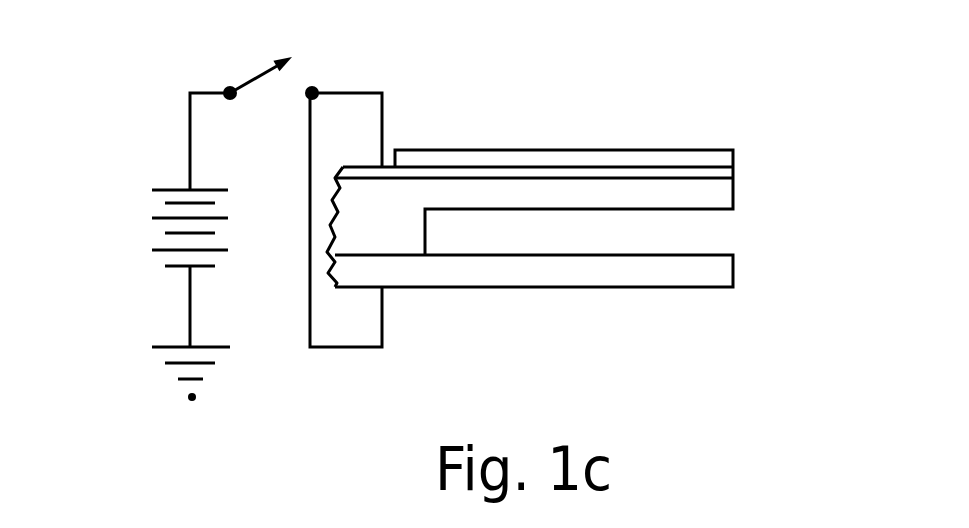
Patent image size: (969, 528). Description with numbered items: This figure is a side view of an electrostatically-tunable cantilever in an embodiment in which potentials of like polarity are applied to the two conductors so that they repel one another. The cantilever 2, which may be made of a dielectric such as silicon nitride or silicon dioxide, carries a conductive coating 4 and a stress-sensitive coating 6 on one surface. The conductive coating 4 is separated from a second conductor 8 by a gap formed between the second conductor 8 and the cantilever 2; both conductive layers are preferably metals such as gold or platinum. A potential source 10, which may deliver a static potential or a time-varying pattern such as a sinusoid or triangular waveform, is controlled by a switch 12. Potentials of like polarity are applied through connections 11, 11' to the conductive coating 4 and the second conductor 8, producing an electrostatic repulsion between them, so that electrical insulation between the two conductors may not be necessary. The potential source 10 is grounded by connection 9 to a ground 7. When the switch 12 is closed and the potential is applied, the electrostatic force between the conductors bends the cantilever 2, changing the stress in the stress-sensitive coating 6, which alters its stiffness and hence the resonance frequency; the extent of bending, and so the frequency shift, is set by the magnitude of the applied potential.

The switch 12 is at (253, 78).
The potential source 10 is at (157, 218).
The connection 9 is at (188, 312).
The ground 7 is at (181, 382).
The connection 11 is at (396, 143).
The connection 11' is at (411, 296).
The stress-sensitive coating 6 is at (692, 149).
The conductive coating 4 is at (735, 170).
The cantilever 2 is at (735, 193).
The second conductor 8 is at (735, 268).